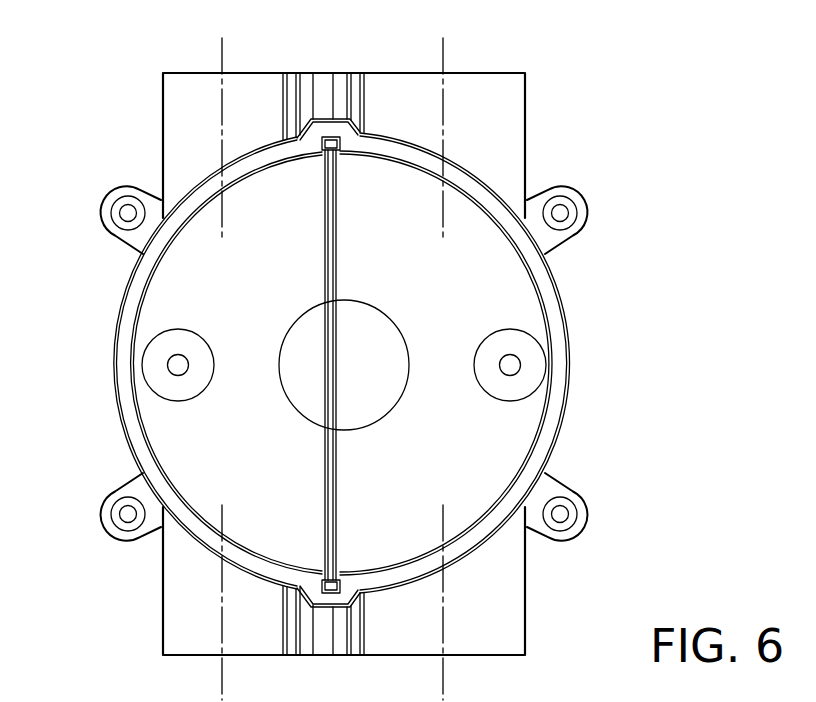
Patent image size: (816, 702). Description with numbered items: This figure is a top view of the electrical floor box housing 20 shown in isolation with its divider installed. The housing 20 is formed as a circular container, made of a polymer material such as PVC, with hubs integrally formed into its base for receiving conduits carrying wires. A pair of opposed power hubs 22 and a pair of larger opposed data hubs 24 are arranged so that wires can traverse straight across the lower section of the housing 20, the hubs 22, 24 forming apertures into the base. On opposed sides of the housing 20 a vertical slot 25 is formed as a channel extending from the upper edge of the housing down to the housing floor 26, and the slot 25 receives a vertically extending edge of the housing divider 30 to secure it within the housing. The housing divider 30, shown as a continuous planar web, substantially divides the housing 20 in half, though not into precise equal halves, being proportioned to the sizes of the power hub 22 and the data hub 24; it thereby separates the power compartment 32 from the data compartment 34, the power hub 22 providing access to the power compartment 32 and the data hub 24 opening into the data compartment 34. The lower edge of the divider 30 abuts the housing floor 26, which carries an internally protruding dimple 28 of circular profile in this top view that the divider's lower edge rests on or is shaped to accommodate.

The floor box 20 is at (572, 328).
The power hubs 22 is at (212, 73).
The data hubs 24 is at (450, 73).
The vertical slot 25 is at (322, 133).
The housing floor 26 is at (527, 418).
The dimple 28 is at (390, 381).
The housing divider 30 is at (325, 262).
The power compartment 32 is at (220, 452).
The data compartment 34 is at (480, 267).